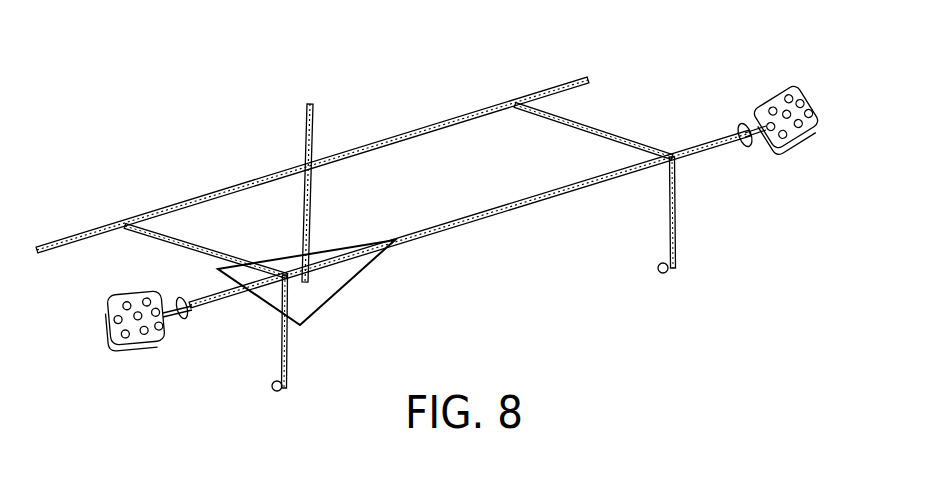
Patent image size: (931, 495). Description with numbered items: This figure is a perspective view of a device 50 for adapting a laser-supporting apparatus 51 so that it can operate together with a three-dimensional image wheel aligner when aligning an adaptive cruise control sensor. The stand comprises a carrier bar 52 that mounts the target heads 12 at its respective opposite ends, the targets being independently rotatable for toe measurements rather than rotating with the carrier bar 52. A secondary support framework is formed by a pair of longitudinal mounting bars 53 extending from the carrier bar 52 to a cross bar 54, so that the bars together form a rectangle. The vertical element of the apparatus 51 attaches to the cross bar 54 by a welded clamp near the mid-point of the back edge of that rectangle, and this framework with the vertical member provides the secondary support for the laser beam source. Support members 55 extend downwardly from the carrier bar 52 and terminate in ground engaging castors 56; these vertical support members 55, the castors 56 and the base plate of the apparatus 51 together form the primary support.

The device 50 is at (704, 78).
The apparatus 51 is at (370, 102).
The carrier bar 52 is at (538, 201).
The longitudinal mounting bars 53 is at (188, 243).
The cross bar 54 is at (403, 138).
The support members 55 is at (288, 358).
The castors 56 is at (280, 393).
The target heads 12 is at (134, 346).